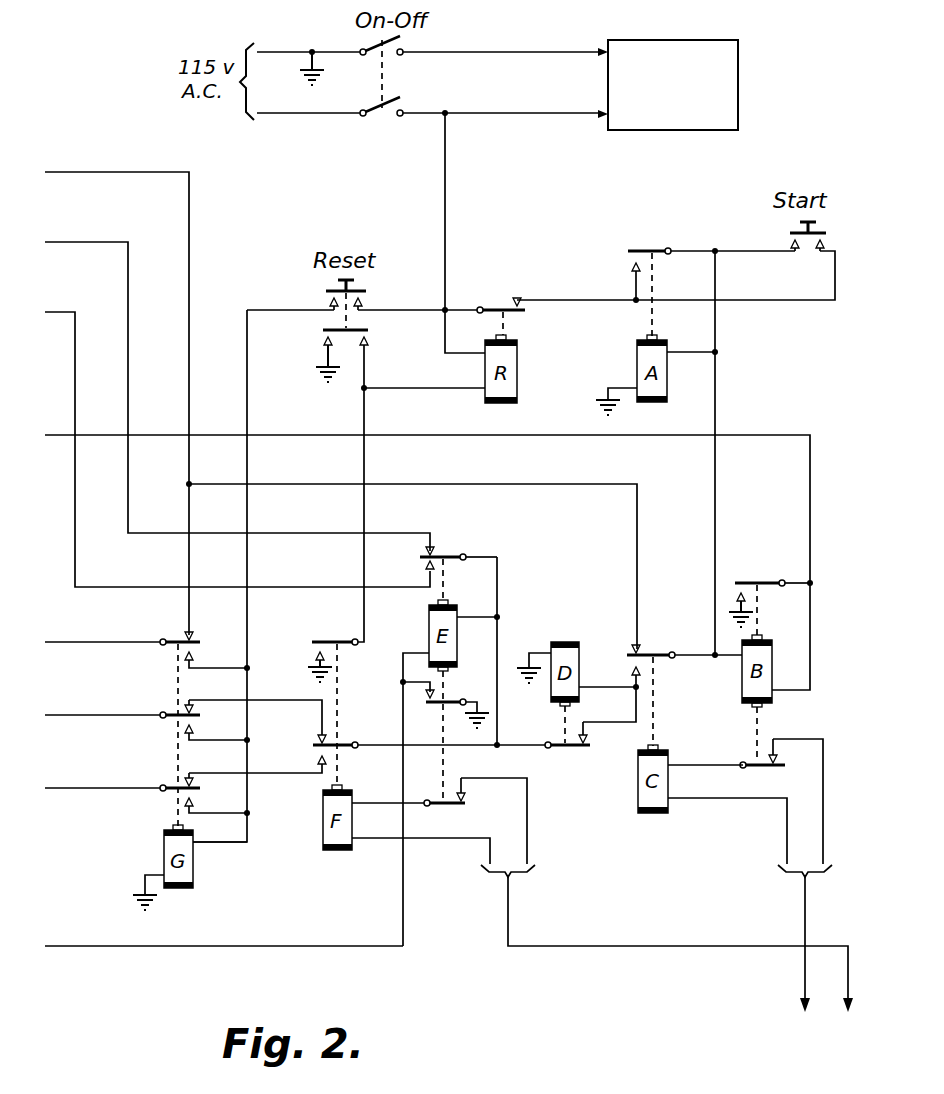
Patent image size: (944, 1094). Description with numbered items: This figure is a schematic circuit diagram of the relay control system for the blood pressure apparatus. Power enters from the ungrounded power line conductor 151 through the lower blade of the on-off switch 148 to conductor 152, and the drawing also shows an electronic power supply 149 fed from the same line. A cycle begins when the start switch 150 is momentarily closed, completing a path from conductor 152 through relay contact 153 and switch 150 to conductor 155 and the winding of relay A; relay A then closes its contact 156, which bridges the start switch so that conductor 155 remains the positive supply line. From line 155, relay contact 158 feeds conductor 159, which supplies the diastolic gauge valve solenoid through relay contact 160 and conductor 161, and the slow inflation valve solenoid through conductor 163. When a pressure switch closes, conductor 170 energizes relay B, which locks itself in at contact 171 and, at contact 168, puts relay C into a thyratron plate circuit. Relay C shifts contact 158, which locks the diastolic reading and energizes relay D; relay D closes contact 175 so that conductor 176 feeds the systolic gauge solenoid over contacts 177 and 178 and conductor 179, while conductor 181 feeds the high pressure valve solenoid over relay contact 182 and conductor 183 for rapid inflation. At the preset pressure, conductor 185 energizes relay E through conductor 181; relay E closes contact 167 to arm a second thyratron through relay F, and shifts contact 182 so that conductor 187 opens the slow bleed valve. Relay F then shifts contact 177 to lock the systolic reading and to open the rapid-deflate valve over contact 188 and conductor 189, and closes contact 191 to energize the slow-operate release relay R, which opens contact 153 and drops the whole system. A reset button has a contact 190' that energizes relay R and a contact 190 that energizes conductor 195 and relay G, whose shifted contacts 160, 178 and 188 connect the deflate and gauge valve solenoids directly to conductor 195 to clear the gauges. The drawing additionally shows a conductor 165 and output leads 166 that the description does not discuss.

The switch 148 is at (384, 85).
The electronic power supply 149 is at (738, 85).
The start switch 150 is at (788, 241).
The ungrounded power line conductor 151 is at (307, 115).
The conductor 152 is at (447, 219).
The relay contact 153 is at (502, 305).
The conductor 155 is at (718, 333).
The relay contact 156 is at (630, 262).
The relay contact 158 is at (645, 651).
The conductor 159 is at (428, 484).
The relay contact 160 is at (185, 636).
The conductor 161 is at (74, 642).
The conductor 163 is at (80, 172).
The conductor 165 is at (654, 946).
The output leads 166 is at (803, 981).
The relay contact 167 is at (468, 803).
The relay contact 168 is at (785, 760).
The conductor 170 is at (100, 435).
The relay contact 171 is at (750, 583).
The relay contact 175 is at (592, 746).
The conductor 176 is at (458, 746).
The relay contact 177 is at (335, 745).
The relay contact 178 is at (185, 712).
The conductor 179 is at (85, 715).
The conductor 181 is at (497, 634).
The relay contact 182 is at (440, 555).
The conductor 183 is at (70, 242).
The conductor 185 is at (73, 946).
The conductor 187 is at (58, 312).
The relay contact 188 is at (184, 785).
The conductor 189 is at (80, 788).
The reset switch contact 190 is at (324, 304).
The reset switch contact 190' is at (318, 355).
The relay contact 191 is at (311, 646).
The conductor 195 is at (248, 401).